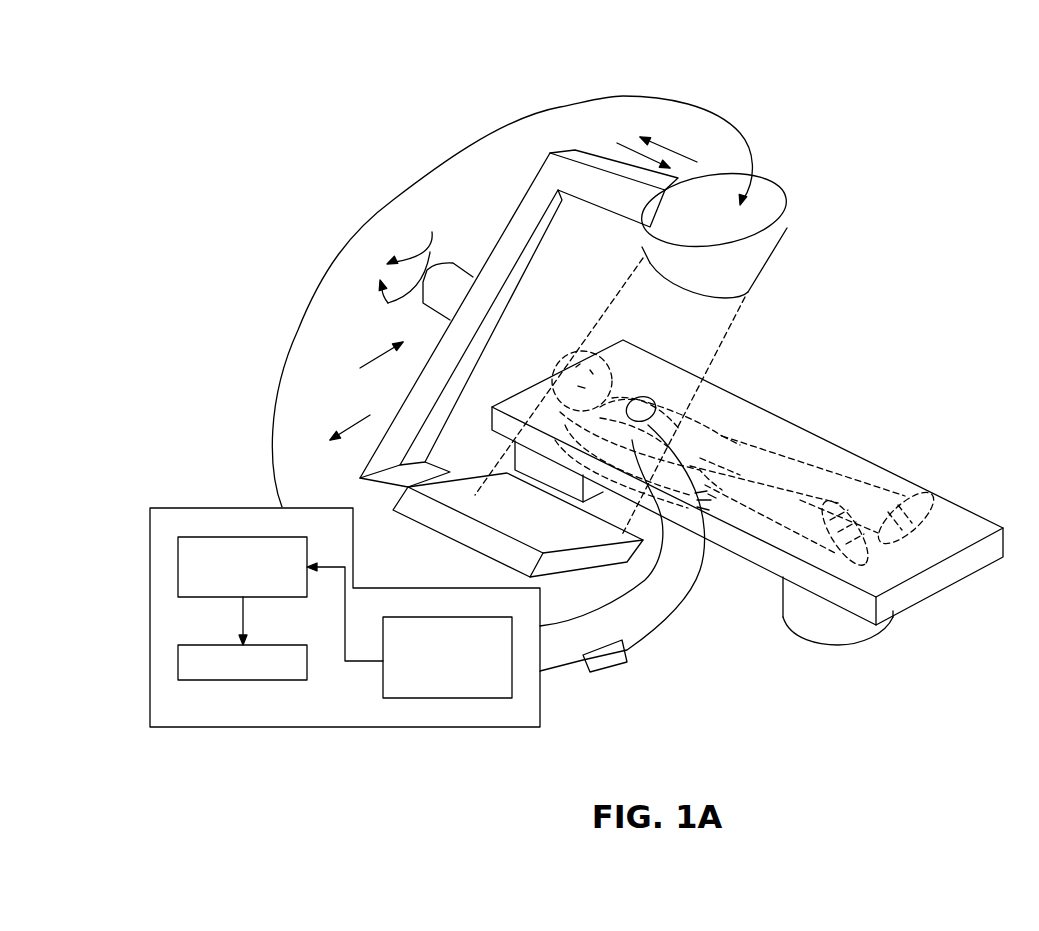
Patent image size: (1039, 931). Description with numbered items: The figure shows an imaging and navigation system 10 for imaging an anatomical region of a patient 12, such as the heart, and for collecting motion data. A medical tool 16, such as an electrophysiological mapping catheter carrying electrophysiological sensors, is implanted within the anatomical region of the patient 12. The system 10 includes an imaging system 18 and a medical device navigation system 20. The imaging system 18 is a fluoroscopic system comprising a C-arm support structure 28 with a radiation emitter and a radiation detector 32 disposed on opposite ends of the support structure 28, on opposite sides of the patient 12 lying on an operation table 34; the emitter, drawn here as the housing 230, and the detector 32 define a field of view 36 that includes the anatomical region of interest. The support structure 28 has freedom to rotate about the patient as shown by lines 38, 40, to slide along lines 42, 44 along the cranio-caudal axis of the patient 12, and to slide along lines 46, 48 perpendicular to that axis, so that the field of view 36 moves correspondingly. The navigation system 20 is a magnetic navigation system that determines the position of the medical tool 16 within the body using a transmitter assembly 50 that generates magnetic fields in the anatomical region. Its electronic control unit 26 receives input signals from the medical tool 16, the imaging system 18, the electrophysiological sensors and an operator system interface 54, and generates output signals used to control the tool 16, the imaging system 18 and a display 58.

The imaging and navigation system 10 is at (912, 128).
The patient 12 is at (565, 350).
The medical tool 16 is at (624, 422).
The imaging system 18 is at (490, 162).
The medical device navigation system 20 is at (561, 715).
The electronic control unit 26 is at (227, 598).
The C-arm support structure 28 is at (528, 191).
The radiation detector 32 is at (457, 532).
The operation table 34 is at (977, 570).
The field of view 36 is at (735, 315).
The rotation line 38 is at (432, 232).
The rotation line 40 is at (388, 303).
The slide line 42 is at (627, 141).
The slide line 44 is at (663, 145).
The slide line 46 is at (372, 362).
The slide line 48 is at (357, 423).
The transmitter assembly 50 is at (713, 433).
The operator system interface 54 is at (444, 699).
The display 58 is at (243, 682).
The X-ray source 230 is at (780, 218).